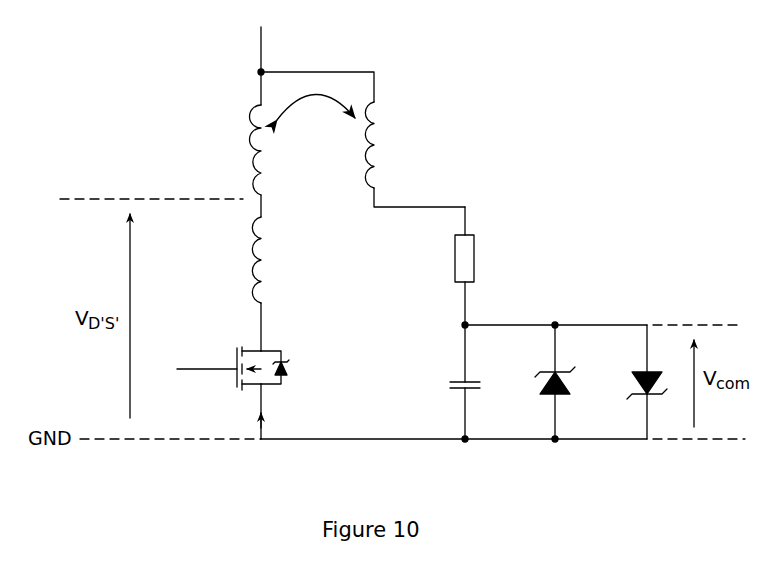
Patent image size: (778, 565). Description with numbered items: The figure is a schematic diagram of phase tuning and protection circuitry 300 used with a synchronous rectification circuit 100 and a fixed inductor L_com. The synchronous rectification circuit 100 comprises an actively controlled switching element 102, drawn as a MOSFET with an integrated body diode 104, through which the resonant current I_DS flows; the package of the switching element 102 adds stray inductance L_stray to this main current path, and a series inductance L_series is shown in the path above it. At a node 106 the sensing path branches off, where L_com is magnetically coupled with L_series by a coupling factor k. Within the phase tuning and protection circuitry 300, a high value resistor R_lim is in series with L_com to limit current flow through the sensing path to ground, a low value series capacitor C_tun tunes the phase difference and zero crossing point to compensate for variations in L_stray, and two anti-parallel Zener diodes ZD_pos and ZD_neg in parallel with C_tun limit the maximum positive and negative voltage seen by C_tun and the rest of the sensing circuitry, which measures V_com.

The synchronous rectification circuit 100 is at (133, 81).
The actively controlled switching element 102 is at (232, 334).
The integrated body diode 104 is at (283, 333).
The drain node 106 is at (268, 66).
The phase tuning and protection circuitry 300 is at (582, 193).